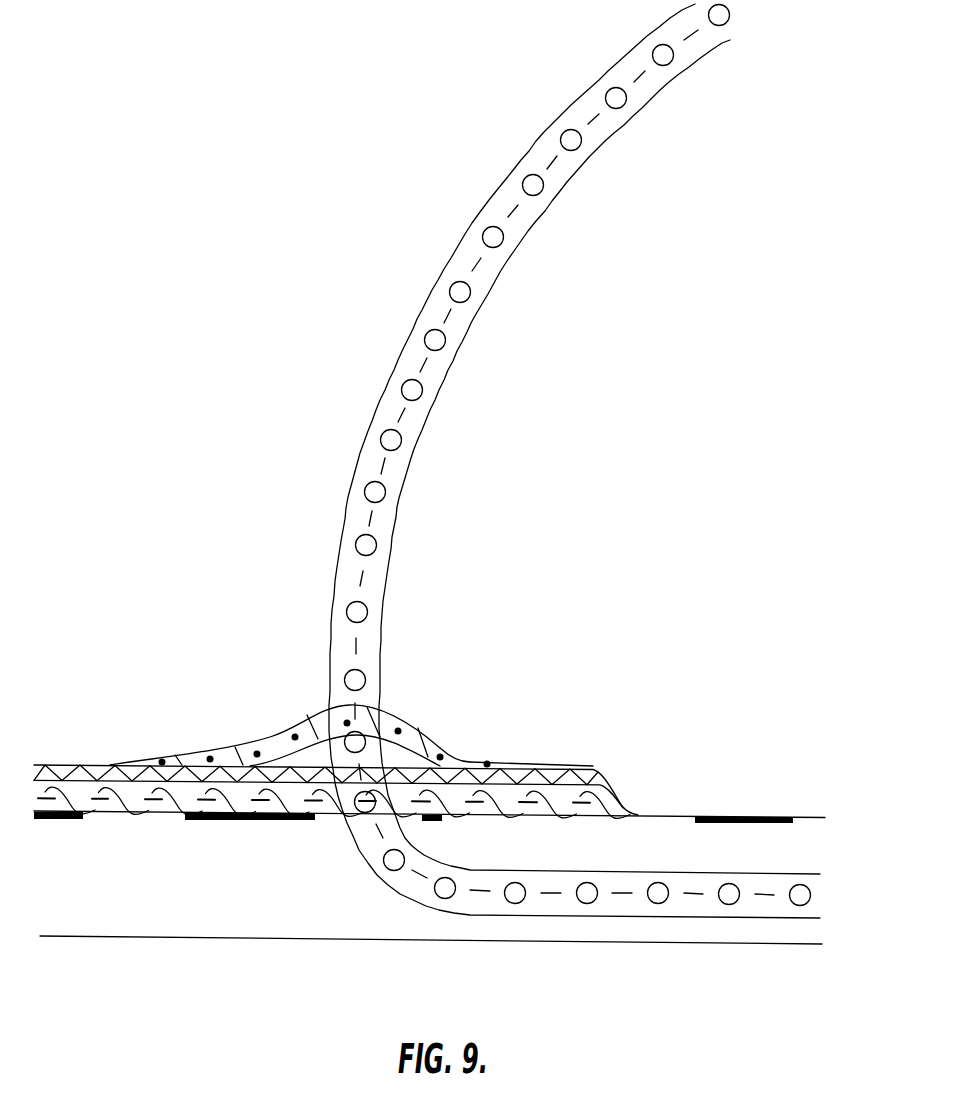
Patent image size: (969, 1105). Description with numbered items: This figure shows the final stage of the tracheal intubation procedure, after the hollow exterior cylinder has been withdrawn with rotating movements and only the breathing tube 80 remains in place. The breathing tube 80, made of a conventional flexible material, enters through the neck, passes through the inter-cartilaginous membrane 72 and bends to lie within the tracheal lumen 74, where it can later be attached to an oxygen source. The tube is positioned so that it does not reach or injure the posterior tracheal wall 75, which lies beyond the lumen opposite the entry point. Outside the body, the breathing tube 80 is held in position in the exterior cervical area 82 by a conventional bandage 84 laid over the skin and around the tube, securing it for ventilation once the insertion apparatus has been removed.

The breathing tube 80 is at (493, 192).
The exterior cervical area 82 is at (498, 763).
The bandage 84 is at (280, 733).
The inter-cartilaginous membrane 72 is at (613, 805).
The tracheal lumen 74 is at (717, 845).
The posterior tracheal wall 75 is at (250, 938).